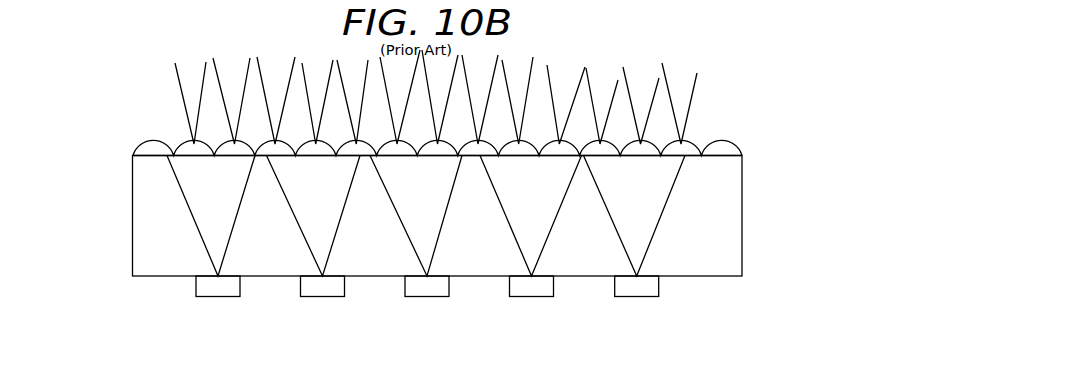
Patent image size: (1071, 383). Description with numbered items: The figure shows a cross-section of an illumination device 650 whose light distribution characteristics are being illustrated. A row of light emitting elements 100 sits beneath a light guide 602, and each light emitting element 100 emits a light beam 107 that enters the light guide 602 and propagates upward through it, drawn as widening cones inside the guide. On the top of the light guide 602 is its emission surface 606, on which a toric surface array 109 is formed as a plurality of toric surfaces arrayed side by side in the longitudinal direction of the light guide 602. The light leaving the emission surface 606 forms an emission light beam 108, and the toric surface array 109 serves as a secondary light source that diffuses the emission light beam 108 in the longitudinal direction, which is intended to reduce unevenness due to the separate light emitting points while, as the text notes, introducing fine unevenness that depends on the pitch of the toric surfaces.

The light emitting element 100 is at (217, 297).
The light beam 107 is at (620, 233).
The emission light beam 108 is at (690, 105).
The toric surface array 109 is at (690, 137).
The light guide 602 is at (718, 237).
The emission surface 606 is at (733, 152).
The illumination device 650 is at (118, 253).